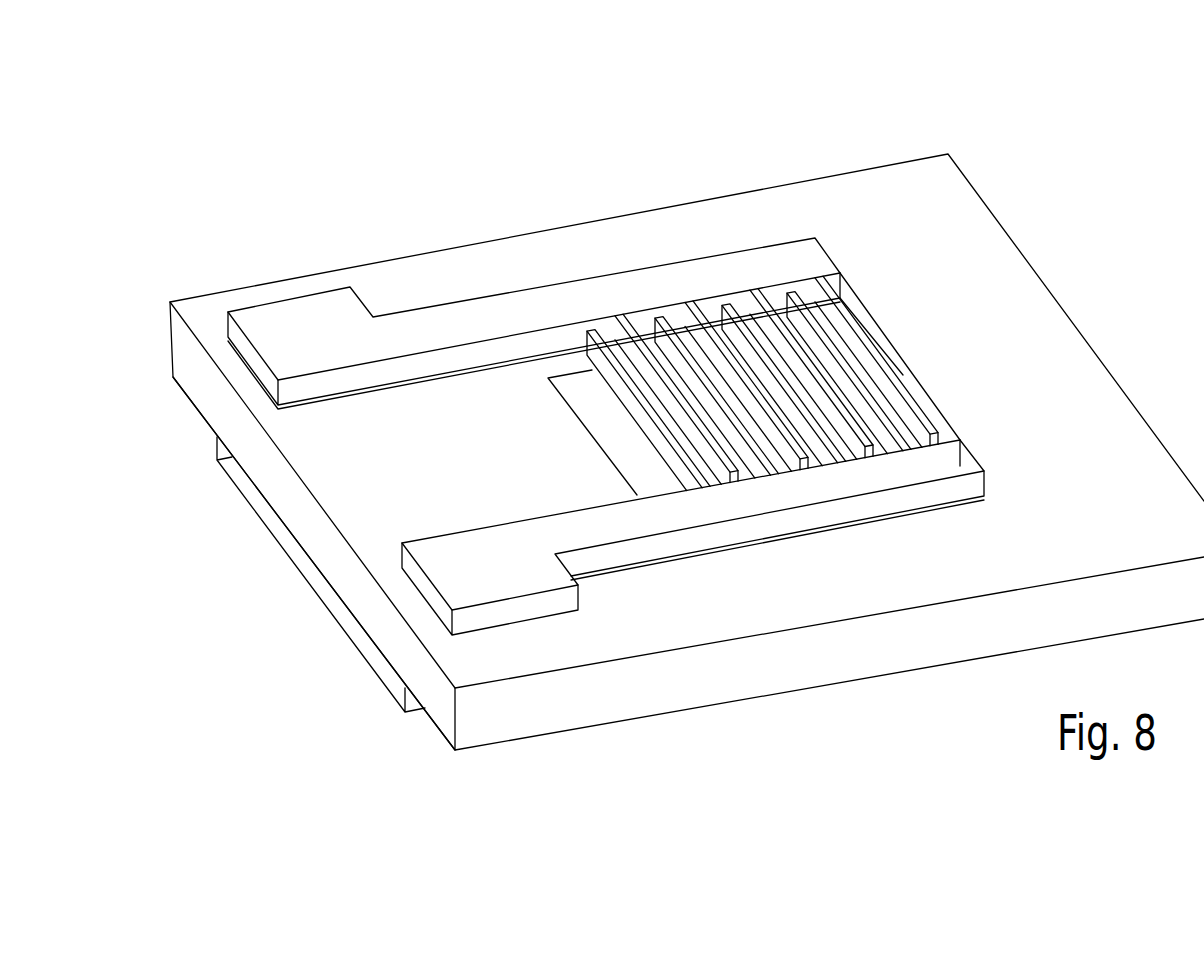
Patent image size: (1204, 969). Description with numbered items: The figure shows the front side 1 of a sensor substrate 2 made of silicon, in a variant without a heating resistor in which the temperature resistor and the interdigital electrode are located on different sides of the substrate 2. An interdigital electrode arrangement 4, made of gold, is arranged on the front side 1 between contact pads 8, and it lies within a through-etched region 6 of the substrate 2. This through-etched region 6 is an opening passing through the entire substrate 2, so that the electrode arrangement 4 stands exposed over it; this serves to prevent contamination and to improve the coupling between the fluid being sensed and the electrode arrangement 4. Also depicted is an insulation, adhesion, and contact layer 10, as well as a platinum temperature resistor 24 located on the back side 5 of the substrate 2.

The front side 1 is at (891, 210).
The substrate 2 is at (860, 643).
The interdigital electrode arrangement 4 is at (663, 360).
The back side 5 is at (434, 735).
The through-etched region 6 is at (627, 449).
The contact pads 8 is at (487, 563).
The insulation, adhesion, and contact layer 10 is at (342, 403).
The platinum temperature resistor 24 is at (392, 697).